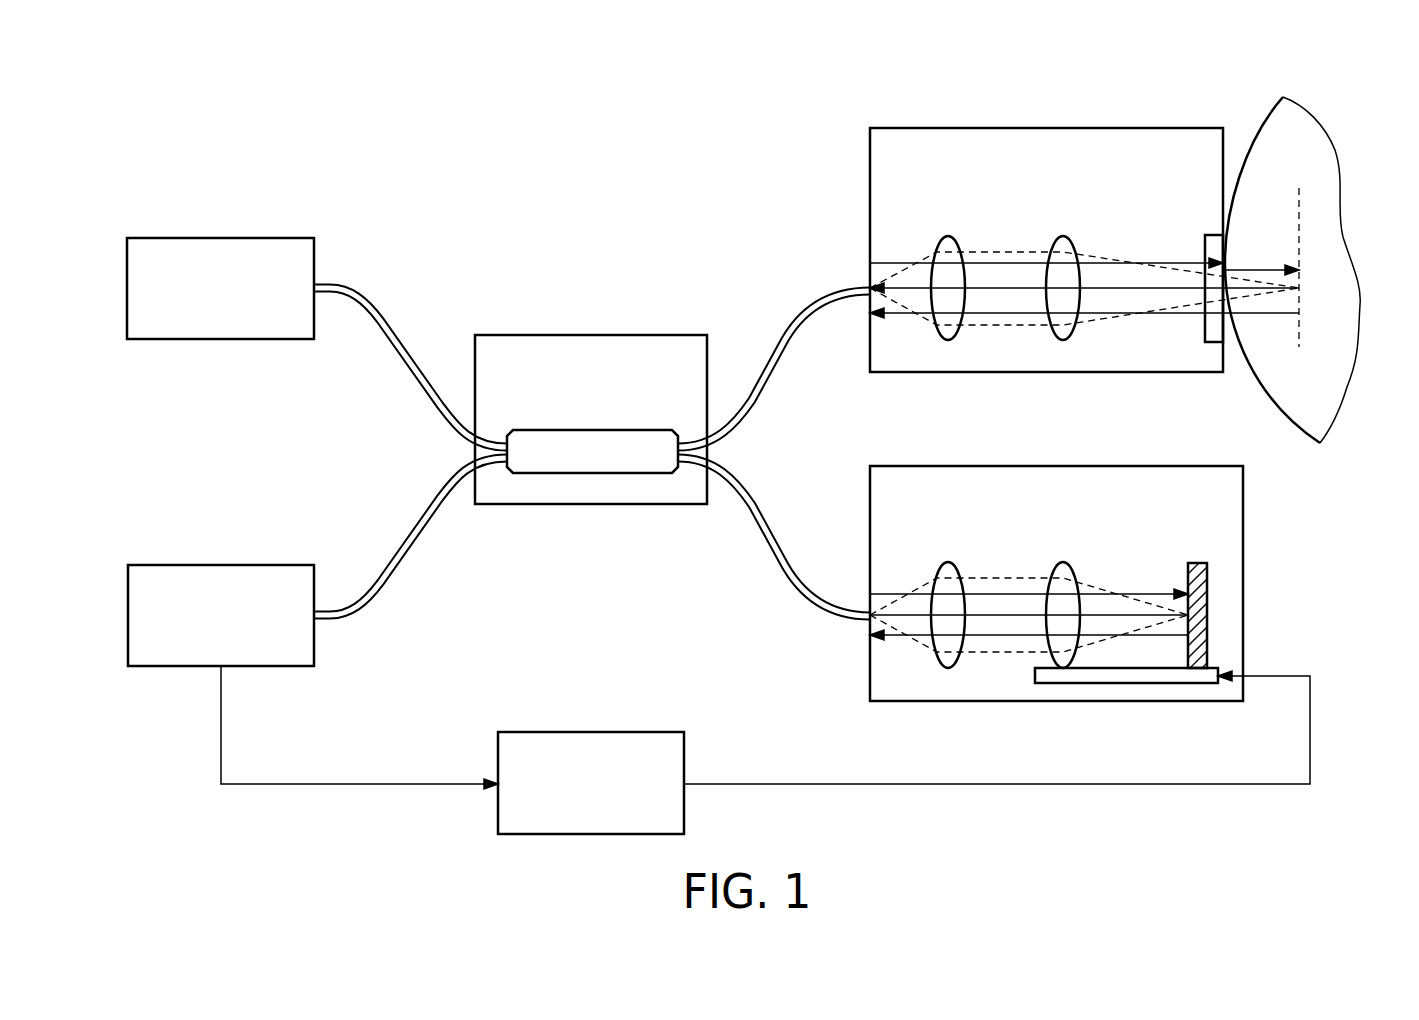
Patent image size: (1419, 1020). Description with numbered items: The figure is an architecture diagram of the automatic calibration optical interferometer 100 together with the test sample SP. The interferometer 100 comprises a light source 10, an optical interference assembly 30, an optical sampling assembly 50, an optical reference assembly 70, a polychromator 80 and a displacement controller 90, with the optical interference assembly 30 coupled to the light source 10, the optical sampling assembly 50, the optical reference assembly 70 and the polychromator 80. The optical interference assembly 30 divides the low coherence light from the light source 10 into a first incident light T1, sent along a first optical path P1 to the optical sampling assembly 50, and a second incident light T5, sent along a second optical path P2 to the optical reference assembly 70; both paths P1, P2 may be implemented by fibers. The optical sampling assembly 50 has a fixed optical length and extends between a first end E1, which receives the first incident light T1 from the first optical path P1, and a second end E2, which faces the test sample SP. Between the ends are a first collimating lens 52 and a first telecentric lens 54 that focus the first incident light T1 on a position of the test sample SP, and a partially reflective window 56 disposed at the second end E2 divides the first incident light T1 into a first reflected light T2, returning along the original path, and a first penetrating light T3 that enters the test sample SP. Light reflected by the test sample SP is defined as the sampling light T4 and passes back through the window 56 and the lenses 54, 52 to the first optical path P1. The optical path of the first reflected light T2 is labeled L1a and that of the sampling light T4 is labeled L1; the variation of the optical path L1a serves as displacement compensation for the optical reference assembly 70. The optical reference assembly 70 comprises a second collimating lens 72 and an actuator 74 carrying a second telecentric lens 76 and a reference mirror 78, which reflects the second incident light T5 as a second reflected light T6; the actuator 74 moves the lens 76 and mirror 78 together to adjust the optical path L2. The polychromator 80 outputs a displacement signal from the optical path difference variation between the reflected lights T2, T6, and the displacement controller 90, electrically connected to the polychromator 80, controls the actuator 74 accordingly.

The automatic calibration optical interferometer 100 is at (373, 91).
The light source 10 is at (220, 238).
The optical interference assembly 30 is at (592, 335).
The optical sampling assembly 50 is at (1093, 128).
The first collimating lens 52 is at (948, 342).
The first telecentric lens 54 is at (1063, 342).
The partially reflective window 56 is at (1213, 335).
The optical reference assembly 70 is at (1243, 522).
The second collimating lens 72 is at (948, 668).
The actuator 74 is at (1160, 683).
The second telecentric lens 76 is at (1063, 657).
The reference mirror 78 is at (1207, 605).
The polychromator 80 is at (220, 565).
The displacement controller 90 is at (592, 732).
The first optical path P1 is at (787, 338).
The second optical path P2 is at (785, 567).
The first end E1 is at (868, 108).
The second end E2 is at (1223, 108).
The optical path of the sampling light L1 is at (1285, 196).
The optical path of the first reflected light L1a is at (1209, 163).
The optical path of the second incident light L2 is at (1188, 557).
The first incident light T1 is at (1183, 262).
The first reflected light T2 is at (1107, 290).
The first penetrating light T3 is at (1260, 270).
The sampling light T4 is at (1183, 313).
The second incident light T5 is at (1145, 593).
The second reflected light T6 is at (1010, 637).
The test sample SP is at (1305, 370).